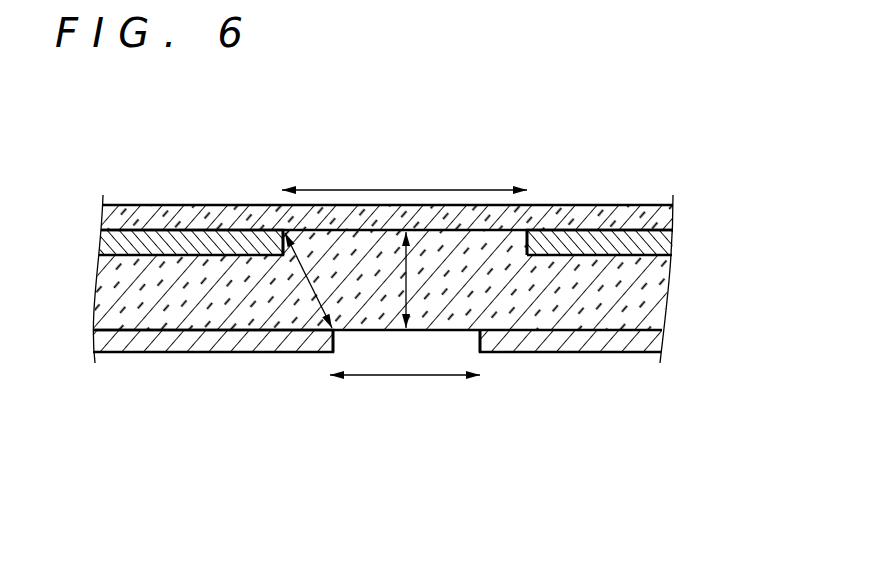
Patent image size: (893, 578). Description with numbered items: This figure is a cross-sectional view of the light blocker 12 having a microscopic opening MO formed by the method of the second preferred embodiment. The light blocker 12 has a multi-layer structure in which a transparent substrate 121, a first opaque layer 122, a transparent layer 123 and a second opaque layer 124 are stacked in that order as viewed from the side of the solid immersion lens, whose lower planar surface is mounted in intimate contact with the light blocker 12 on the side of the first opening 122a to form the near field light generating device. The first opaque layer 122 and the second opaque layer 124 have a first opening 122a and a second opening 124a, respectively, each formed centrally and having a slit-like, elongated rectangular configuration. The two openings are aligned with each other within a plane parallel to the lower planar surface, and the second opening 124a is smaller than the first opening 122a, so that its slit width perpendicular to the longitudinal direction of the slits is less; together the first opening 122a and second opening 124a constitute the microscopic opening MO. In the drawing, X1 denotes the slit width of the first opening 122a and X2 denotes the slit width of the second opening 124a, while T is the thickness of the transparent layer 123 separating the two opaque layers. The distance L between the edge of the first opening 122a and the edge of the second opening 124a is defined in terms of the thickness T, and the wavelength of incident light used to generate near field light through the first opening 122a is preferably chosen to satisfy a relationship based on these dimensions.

The light blocker 12 is at (419, 279).
The transparent substrate 121 is at (676, 218).
The first opaque layer 122 is at (664, 243).
The transparent layer 123 is at (648, 298).
The second opaque layer 124 is at (383, 348).
The first opening 122a is at (479, 334).
The second opening 124a is at (527, 255).
The microscopic opening MO is at (408, 356).
The slit width of the first opening X1 is at (404, 176).
The slit width of the second opening X2 is at (405, 389).
The thickness of the transparent layer T is at (415, 280).
The distance between opening edges L is at (311, 280).